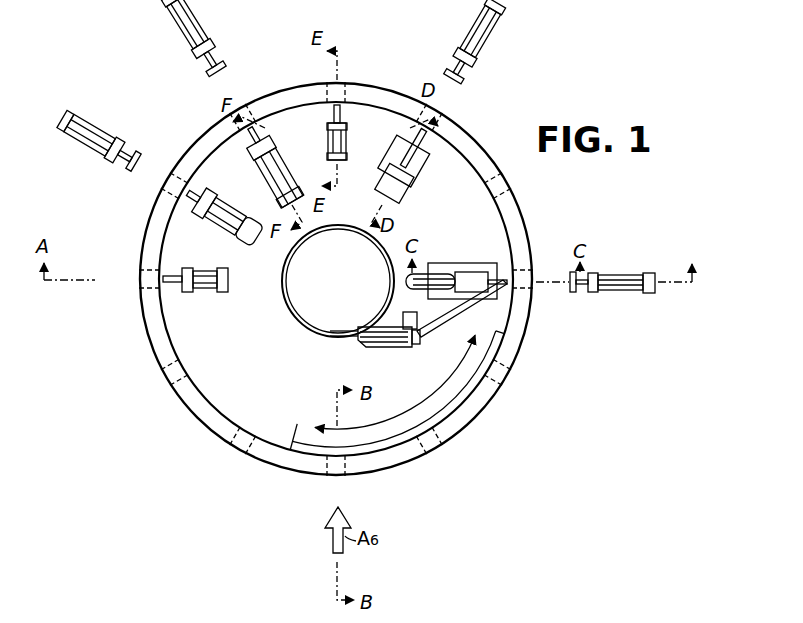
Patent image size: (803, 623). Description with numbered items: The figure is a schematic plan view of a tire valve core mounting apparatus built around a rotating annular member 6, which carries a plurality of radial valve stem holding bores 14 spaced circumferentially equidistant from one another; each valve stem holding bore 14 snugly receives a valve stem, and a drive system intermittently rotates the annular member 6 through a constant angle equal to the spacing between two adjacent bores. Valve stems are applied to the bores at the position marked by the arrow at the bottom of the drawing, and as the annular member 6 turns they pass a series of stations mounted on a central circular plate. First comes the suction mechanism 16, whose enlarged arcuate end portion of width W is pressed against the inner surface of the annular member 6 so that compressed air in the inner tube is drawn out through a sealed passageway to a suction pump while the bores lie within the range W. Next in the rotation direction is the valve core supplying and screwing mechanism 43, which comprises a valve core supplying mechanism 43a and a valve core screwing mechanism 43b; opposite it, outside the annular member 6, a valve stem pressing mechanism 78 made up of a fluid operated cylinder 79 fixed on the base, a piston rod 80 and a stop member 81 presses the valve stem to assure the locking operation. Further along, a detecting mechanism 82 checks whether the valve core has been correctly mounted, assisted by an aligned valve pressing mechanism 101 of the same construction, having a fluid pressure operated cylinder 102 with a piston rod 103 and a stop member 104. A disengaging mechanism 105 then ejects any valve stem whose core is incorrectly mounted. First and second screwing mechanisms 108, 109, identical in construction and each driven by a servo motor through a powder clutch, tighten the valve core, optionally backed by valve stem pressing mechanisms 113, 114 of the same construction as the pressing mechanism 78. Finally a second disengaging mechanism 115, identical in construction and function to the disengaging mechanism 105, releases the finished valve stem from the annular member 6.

The annular member 6 is at (201, 424).
The valve stem holding bore 14 is at (239, 456).
The suction mechanism 16 is at (462, 425).
The valve core supplying and screwing mechanism 43 is at (410, 300).
The valve core supplying mechanism 43a is at (383, 349).
The valve core screwing mechanism 43b is at (464, 262).
The valve stem pressing mechanism 78 is at (618, 284).
The fluid operated cylinder 79 is at (634, 292).
The piston rod 80 is at (595, 294).
The stop member 81 is at (572, 294).
The detecting mechanism 82 is at (430, 172).
The valve pressing mechanism 101 is at (499, 58).
The fluid pressure operated cylinder 102 is at (494, 13).
The piston rod 103 is at (467, 65).
The stop member 104 is at (455, 86).
The disengaging mechanism 105 is at (370, 139).
The first screwing mechanism 108 is at (290, 158).
The second screwing mechanism 109 is at (200, 225).
The valve stem pressing mechanism 113 is at (211, 22).
The valve stem pressing mechanism 114 is at (97, 120).
The disengaging mechanism 115 is at (200, 296).